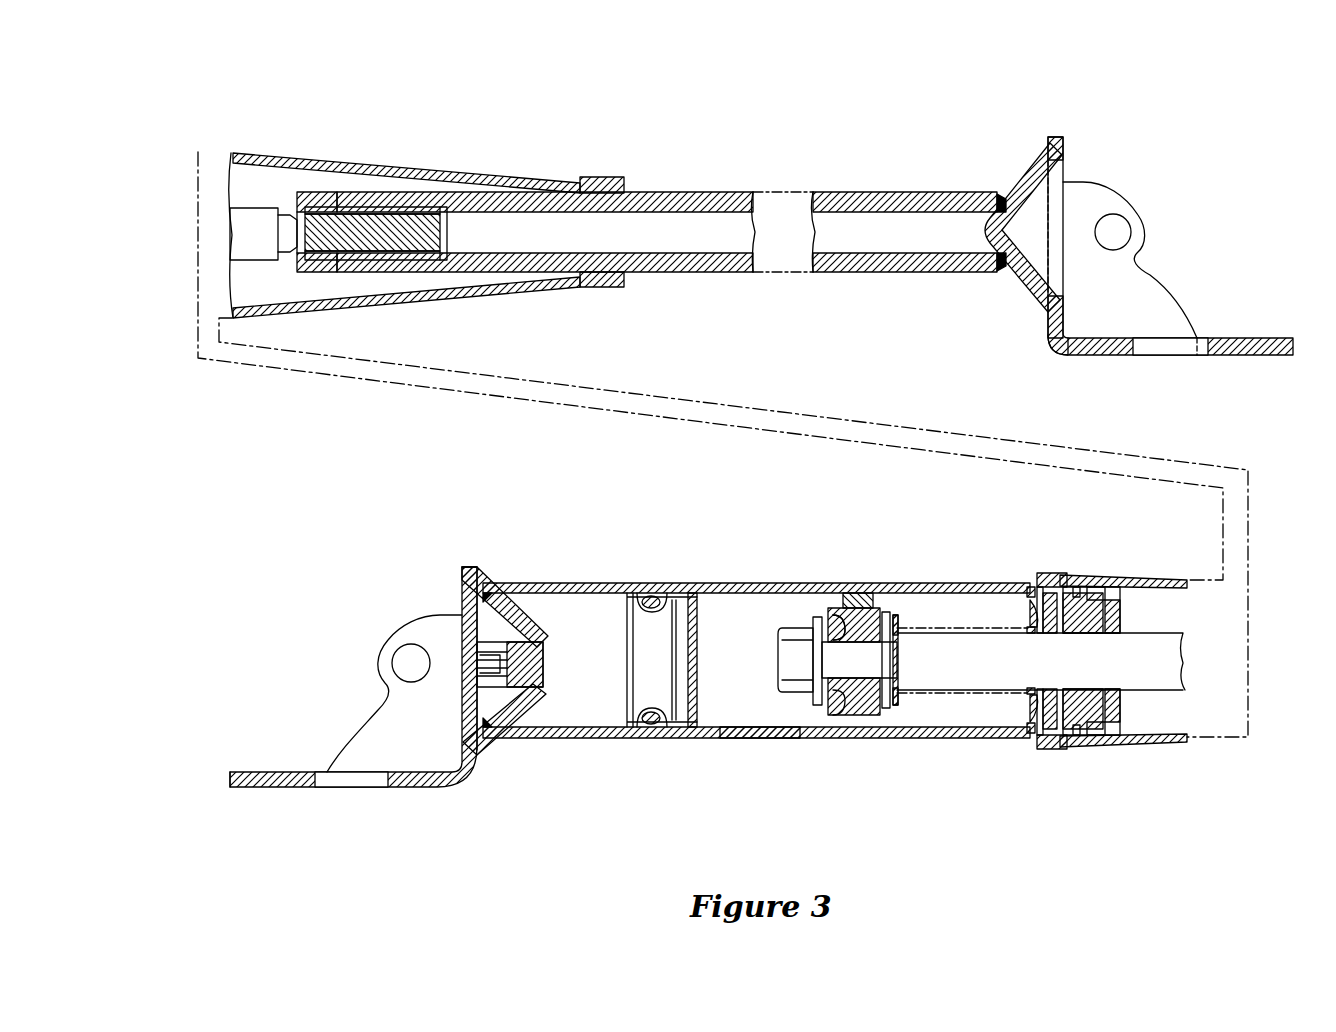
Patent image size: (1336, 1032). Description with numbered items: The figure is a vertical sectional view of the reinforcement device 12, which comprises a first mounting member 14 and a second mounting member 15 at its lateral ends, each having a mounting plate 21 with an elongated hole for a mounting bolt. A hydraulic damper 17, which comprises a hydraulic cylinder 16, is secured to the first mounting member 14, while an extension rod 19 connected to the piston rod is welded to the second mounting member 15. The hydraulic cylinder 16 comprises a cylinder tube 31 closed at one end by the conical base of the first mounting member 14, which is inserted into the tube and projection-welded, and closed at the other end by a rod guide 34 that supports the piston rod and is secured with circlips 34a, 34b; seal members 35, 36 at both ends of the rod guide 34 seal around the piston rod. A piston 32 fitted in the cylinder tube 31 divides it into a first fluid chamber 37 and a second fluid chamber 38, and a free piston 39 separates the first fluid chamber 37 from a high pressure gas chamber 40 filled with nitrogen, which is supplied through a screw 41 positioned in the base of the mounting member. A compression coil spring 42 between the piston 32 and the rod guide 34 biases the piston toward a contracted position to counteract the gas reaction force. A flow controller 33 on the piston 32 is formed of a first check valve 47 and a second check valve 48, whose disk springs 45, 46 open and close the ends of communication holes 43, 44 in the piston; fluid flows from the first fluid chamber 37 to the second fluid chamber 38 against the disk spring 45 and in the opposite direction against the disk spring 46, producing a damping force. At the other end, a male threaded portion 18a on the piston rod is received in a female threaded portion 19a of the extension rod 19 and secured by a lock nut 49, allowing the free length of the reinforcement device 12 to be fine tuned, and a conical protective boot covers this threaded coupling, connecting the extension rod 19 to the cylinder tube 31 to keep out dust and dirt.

The reinforcement device 12 is at (618, 152).
The first mounting member 14 is at (231, 788).
The second mounting member 15 is at (1280, 356).
The hydraulic cylinder 16 is at (590, 740).
The hydraulic damper 17 is at (740, 738).
The male threaded portion 18a is at (402, 216).
The extension rod 19 is at (861, 274).
The female threaded portion 19a is at (400, 268).
The mounting plate 21 is at (260, 772).
The cylinder tube 31 is at (780, 740).
The piston 32 is at (861, 715).
The flow controller 33 is at (889, 607).
The rod guide 34 is at (1086, 589).
The circlip 34a is at (1046, 748).
The circlip 34b is at (1085, 730).
The seal member 35 is at (1035, 598).
The seal member 36 is at (1110, 605).
The first fluid chamber 37 is at (739, 653).
The second fluid chamber 38 is at (947, 606).
The free piston 39 is at (700, 702).
The high pressure gas chamber 40 is at (580, 656).
The screw 41 is at (540, 643).
The compression coil spring 42 is at (1033, 725).
The communication hole 43 is at (838, 716).
The communication hole 44 is at (886, 595).
The disk spring 45 is at (887, 711).
The disk spring 46 is at (840, 605).
The first check valve 47 is at (898, 715).
The second check valve 48 is at (822, 608).
The lock nut 49 is at (320, 274).